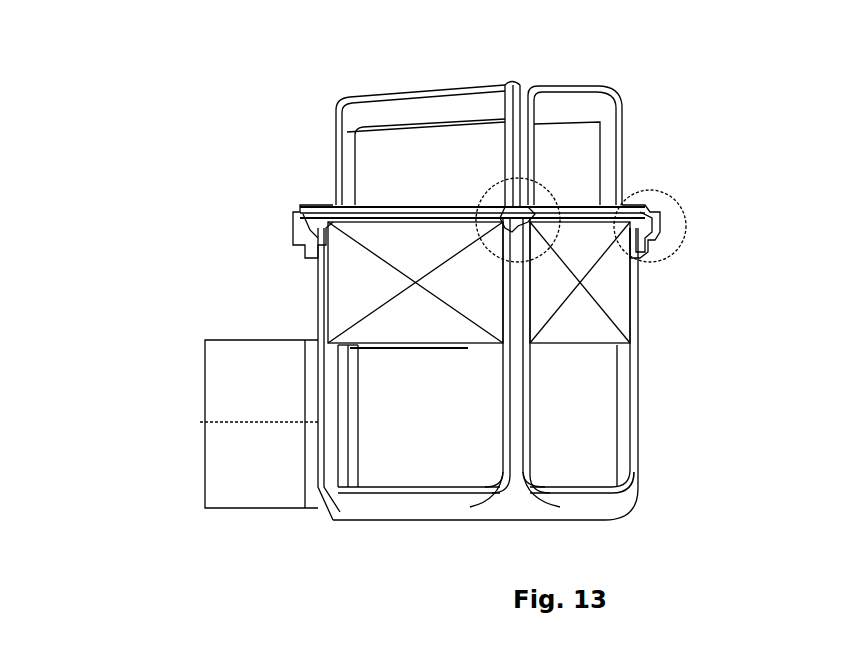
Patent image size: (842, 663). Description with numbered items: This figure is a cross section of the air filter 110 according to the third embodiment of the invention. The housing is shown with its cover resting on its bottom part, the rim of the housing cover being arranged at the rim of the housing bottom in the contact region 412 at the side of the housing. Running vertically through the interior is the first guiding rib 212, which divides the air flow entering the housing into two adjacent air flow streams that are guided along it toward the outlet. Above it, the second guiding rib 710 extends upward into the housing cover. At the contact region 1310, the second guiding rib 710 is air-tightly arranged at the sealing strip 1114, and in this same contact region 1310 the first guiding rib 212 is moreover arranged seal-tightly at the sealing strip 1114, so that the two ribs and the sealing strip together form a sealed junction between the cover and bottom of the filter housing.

The air filter 110 is at (262, 137).
The second guiding rib 710 is at (490, 128).
The contact region 1310 is at (544, 166).
The sealing strip 1114 is at (530, 216).
The contact region 412 is at (672, 272).
The guiding rib 212 is at (495, 435).